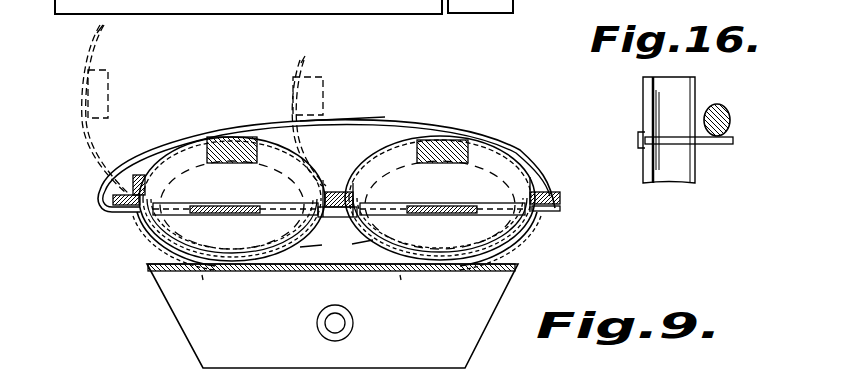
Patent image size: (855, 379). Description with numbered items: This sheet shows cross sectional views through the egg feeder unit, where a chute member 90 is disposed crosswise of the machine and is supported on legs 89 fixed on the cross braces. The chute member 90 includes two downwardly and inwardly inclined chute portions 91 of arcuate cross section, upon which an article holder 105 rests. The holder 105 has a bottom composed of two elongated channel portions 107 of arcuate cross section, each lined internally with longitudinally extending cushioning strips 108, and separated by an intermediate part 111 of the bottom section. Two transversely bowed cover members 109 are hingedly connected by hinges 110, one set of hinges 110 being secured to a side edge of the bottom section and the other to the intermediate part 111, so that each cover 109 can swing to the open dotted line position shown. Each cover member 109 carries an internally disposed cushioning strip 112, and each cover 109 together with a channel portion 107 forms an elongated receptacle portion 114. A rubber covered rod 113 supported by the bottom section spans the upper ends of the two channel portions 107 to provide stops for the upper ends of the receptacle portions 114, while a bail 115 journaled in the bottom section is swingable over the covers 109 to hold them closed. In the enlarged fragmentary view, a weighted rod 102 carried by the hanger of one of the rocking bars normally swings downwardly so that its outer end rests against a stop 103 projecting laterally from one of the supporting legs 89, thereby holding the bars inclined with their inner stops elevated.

In FIG. 9, the frame brow band 105 is at (534, 140).
In FIG. 9, the band top portion 115 is at (372, 122).
In FIG. 9, the strap ends (phantom) 109 is at (90, 145).
In FIG. 9, the lens rim 110 is at (145, 183).
In FIG. 9, the lower lens rim band 107 is at (227, 248).
In FIG. 9, the inner lens outline 113 is at (452, 203).
In FIG. 9, the hatched pad / slider 112 is at (255, 160).
In FIG. 9, the hinge post 114 is at (167, 173).
In FIG. 9, the nose bridge 111 is at (330, 183).
In FIG. 9, the ear band 108 is at (160, 236).
In FIG. 9, the center connector 91 is at (336, 247).
In FIG. 9, the tray base 90 is at (316, 278).
In FIG. 16, the mounting block 89 is at (672, 168).
In FIG. 16, the cross bar 103 is at (713, 148).
In FIG. 16, the roller 102 is at (722, 112).